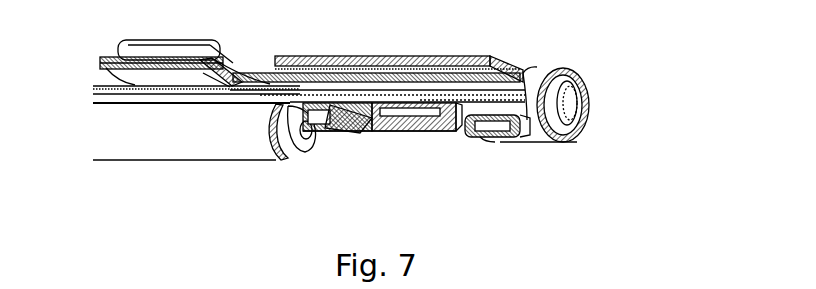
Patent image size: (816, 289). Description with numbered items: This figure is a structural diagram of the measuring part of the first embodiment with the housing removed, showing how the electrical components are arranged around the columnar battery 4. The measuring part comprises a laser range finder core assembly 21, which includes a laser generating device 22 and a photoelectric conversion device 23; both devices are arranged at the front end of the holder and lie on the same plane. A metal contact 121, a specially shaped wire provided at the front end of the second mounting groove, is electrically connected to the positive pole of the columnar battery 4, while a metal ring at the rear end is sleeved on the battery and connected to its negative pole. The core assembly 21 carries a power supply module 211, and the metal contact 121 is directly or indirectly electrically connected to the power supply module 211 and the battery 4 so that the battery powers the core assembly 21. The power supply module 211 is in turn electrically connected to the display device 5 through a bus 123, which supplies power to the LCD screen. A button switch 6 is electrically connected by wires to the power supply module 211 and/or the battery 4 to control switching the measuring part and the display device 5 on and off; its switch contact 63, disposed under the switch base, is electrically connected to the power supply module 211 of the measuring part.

The columnar battery 4 is at (208, 140).
The metal contact 121 is at (310, 138).
The button switch 6 is at (190, 45).
The switch contact 63 is at (170, 72).
The bus 123 is at (235, 62).
The display device 5 is at (398, 57).
The power supply module 211 is at (343, 130).
The laser range finder core assembly 21 is at (438, 127).
The laser generating device 22 is at (532, 118).
The photoelectric conversion device 23 is at (582, 60).